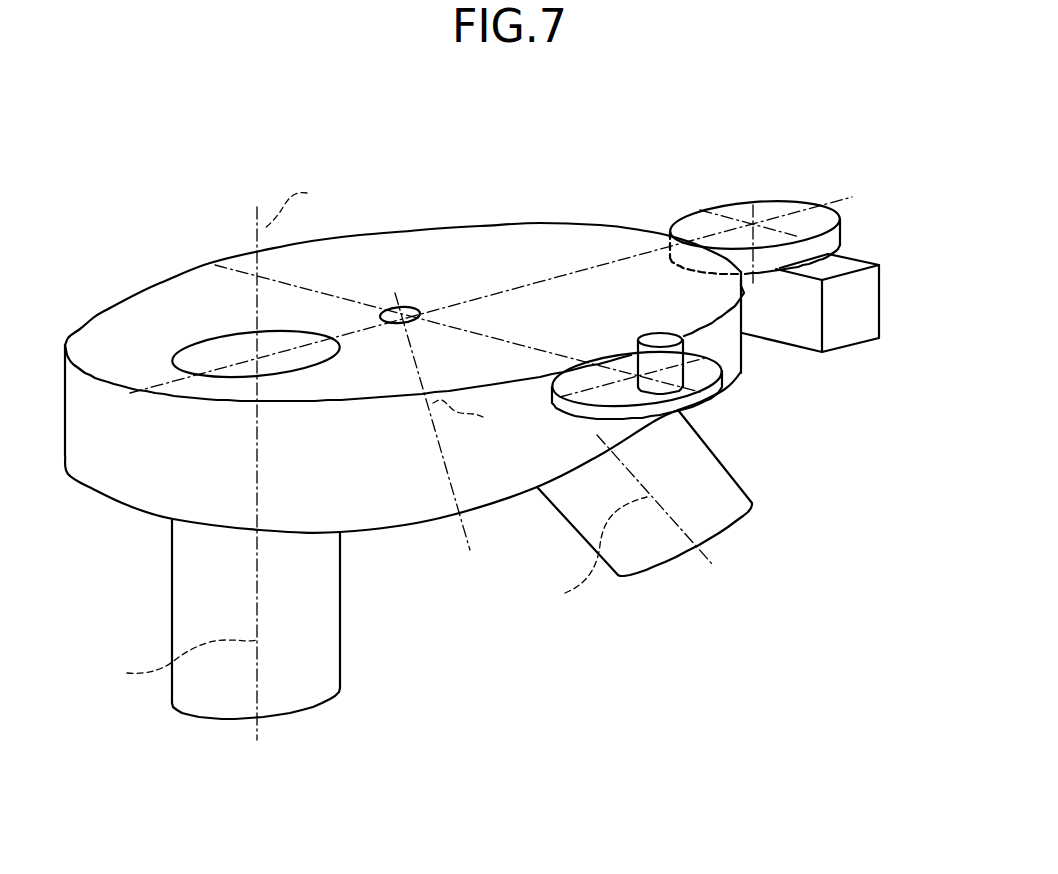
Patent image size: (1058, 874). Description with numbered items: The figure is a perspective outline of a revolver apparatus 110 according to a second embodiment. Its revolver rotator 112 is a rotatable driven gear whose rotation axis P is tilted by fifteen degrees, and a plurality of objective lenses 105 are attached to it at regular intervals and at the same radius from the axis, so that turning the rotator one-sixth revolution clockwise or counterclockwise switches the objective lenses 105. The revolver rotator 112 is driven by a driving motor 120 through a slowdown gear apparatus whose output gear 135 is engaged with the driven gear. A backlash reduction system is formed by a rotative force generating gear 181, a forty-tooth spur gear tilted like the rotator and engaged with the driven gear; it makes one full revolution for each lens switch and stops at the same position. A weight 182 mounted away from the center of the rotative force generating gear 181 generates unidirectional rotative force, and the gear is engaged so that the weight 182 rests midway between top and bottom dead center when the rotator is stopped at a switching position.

The revolver apparatus 110 is at (607, 166).
The revolver rotator 112 is at (425, 243).
The objective lens 105 is at (332, 633).
The output gear 135 is at (770, 210).
The driving motor 120 is at (865, 308).
The rotative force generating gear 181 is at (578, 407).
The weight 182 is at (687, 350).